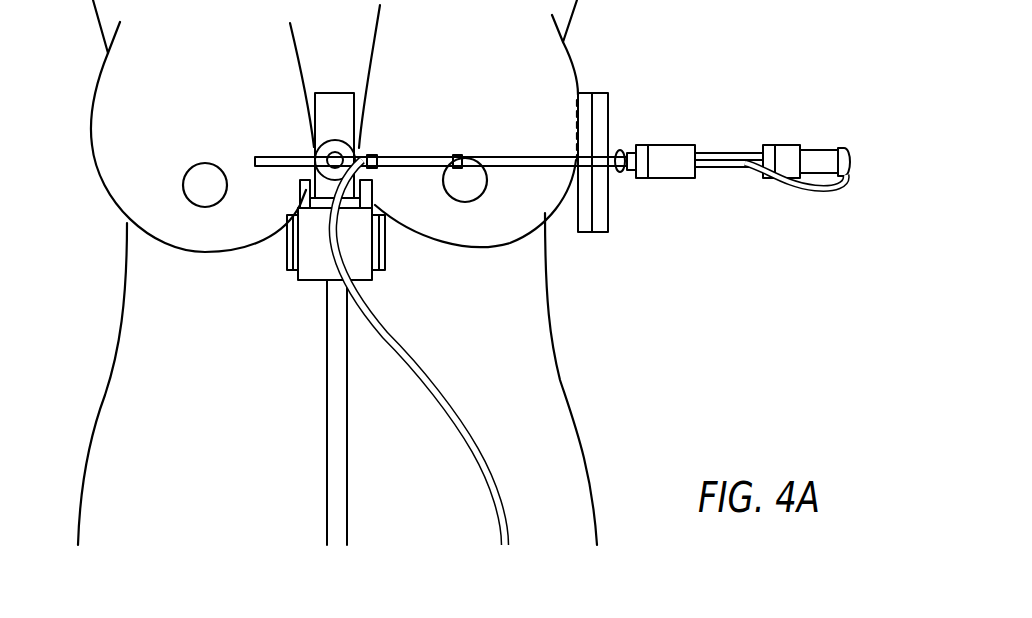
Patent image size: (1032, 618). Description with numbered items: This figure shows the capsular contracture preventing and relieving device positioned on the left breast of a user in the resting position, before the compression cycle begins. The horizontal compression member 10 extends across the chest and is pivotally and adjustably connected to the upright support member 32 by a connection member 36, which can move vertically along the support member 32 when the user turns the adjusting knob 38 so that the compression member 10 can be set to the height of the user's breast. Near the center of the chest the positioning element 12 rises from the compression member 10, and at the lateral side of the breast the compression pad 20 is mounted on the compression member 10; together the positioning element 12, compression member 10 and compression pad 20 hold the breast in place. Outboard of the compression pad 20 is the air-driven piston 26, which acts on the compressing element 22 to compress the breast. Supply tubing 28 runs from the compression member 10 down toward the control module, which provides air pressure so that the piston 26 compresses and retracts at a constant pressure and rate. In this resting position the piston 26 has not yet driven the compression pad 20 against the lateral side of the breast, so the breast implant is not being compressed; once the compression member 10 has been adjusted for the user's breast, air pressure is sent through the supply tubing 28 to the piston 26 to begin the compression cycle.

The compression member 10 is at (513, 163).
The positioning element 12 is at (333, 113).
The compression pad 20 is at (602, 115).
The compressing element 22 is at (736, 140).
The piston 26 is at (821, 162).
The supply tubing 28 is at (458, 420).
The support member 32 is at (335, 433).
The connection member 36 is at (312, 265).
The knob 38 is at (385, 247).